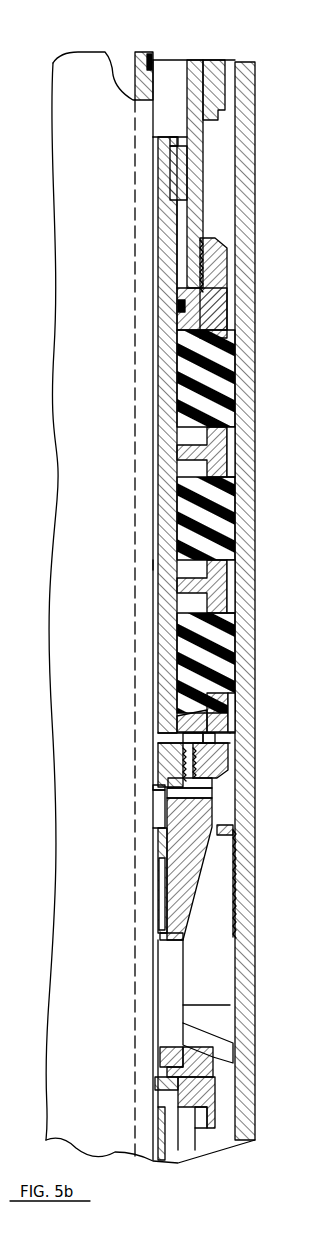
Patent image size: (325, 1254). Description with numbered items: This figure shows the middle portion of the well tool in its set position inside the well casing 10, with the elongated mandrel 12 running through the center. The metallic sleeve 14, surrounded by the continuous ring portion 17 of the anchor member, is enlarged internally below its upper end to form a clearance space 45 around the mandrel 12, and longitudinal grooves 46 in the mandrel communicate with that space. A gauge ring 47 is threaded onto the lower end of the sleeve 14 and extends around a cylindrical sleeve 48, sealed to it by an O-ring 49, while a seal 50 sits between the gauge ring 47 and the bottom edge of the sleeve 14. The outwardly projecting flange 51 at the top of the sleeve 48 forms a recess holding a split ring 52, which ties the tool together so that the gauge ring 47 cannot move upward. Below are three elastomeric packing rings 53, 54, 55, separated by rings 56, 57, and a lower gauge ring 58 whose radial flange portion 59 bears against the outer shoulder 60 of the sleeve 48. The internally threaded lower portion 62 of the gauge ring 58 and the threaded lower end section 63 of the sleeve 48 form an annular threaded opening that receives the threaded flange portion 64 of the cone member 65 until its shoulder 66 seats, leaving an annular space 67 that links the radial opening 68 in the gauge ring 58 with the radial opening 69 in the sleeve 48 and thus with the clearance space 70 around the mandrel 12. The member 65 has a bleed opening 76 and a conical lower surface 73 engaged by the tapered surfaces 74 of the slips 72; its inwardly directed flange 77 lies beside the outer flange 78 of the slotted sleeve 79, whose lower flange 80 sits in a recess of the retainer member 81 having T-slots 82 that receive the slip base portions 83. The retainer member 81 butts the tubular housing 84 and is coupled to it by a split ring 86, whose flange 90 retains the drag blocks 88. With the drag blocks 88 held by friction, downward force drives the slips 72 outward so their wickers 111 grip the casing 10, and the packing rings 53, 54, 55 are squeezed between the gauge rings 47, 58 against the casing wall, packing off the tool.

The well casing 10 is at (256, 108).
The mandrel 12 is at (78, 469).
The metallic sleeve 14 is at (203, 218).
The continuous ring portion 17 is at (215, 100).
The clearance space 45 is at (173, 78).
The longitudinal grooves 46 is at (152, 62).
The gauge ring 47 is at (228, 270).
The cylindrical sleeve 48 is at (163, 408).
The O-ring 49 is at (178, 311).
The seal 50 is at (220, 303).
The outwardly projecting flange 51 is at (172, 146).
The split ring 52 is at (185, 193).
The packing ring 53 is at (232, 379).
The packing ring 54 is at (232, 506).
The packing ring 55 is at (232, 652).
The ring 56 is at (228, 447).
The ring 57 is at (225, 591).
The gauge ring 58 is at (232, 707).
The radial flange portion 59 is at (178, 718).
The outer shoulder 60 is at (178, 728).
The lower portion of gauge ring 62 is at (222, 762).
The lower end section of sleeve 63 is at (170, 760).
The threaded flange portion 64 is at (222, 786).
The member 65 is at (213, 834).
The shoulder 66 is at (170, 784).
The annular space 67 is at (215, 745).
The radial opening 68 is at (235, 733).
The radial opening 69 is at (180, 740).
The clearance space 70 is at (155, 566).
The slips 72 is at (217, 1002).
The conical lower surface 73 is at (208, 858).
The tapered surfaces 74 is at (185, 880).
The radial bleed opening 76 is at (170, 800).
The inwardly directed flange 77 is at (165, 936).
The outer flange 78 is at (165, 848).
The longitudinally slotted sleeve 79 is at (160, 910).
The outwardly projecting flange 80 is at (158, 1072).
The retainer member 81 is at (218, 1081).
The T-slots 82 is at (167, 1033).
The base portions 83 is at (225, 1049).
The tubular housing 84 is at (168, 1140).
The split ring 86 is at (205, 1105).
The drag blocks 88 is at (195, 1125).
The flange 90 is at (213, 1118).
The wickers 111 is at (233, 890).